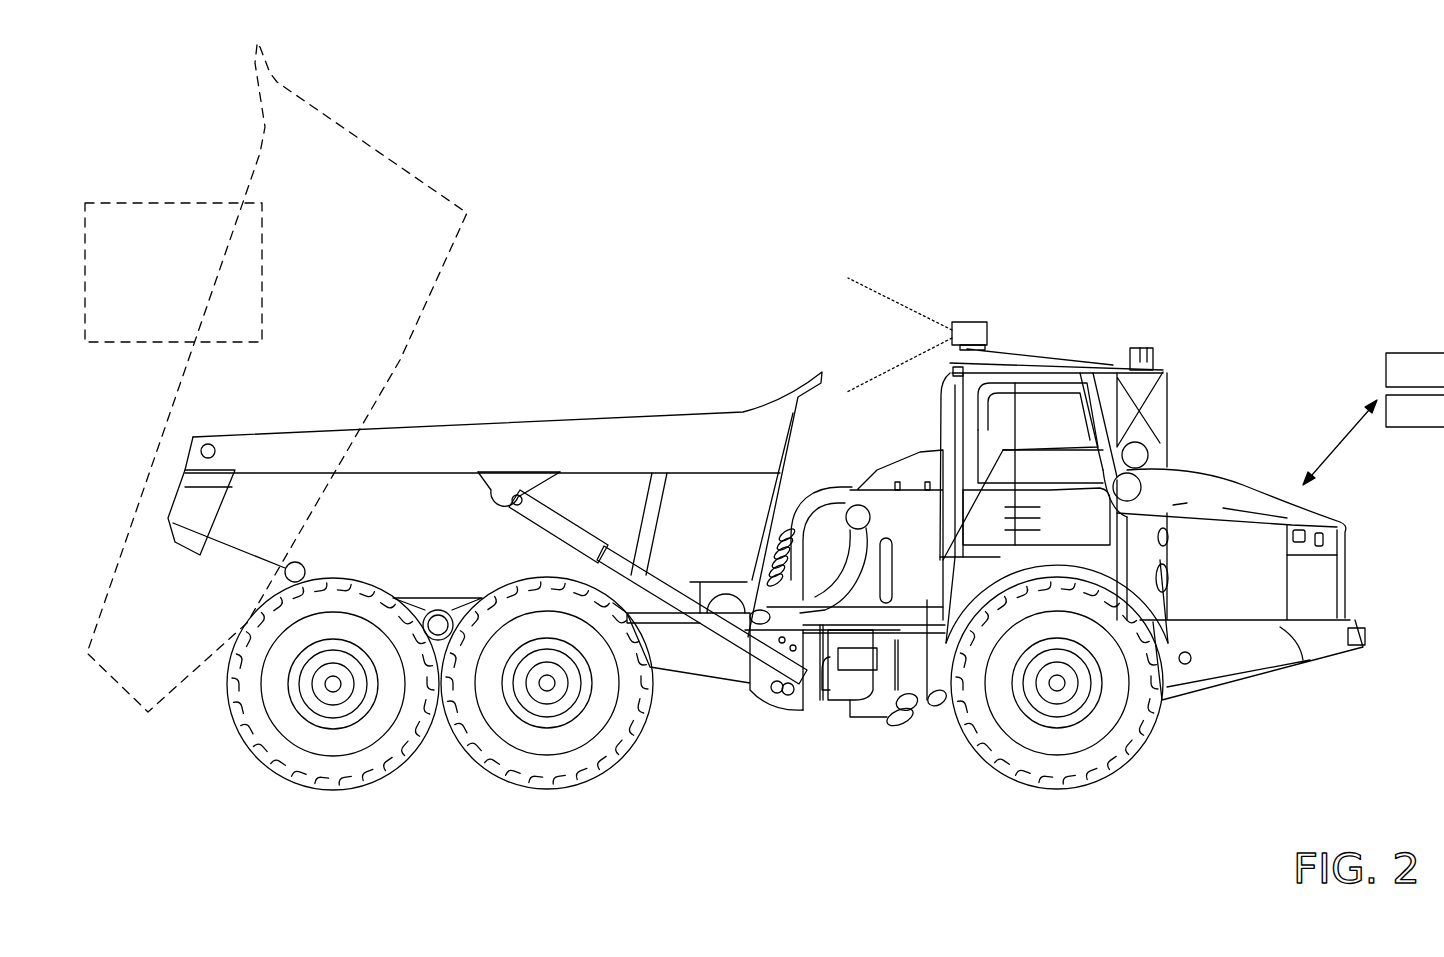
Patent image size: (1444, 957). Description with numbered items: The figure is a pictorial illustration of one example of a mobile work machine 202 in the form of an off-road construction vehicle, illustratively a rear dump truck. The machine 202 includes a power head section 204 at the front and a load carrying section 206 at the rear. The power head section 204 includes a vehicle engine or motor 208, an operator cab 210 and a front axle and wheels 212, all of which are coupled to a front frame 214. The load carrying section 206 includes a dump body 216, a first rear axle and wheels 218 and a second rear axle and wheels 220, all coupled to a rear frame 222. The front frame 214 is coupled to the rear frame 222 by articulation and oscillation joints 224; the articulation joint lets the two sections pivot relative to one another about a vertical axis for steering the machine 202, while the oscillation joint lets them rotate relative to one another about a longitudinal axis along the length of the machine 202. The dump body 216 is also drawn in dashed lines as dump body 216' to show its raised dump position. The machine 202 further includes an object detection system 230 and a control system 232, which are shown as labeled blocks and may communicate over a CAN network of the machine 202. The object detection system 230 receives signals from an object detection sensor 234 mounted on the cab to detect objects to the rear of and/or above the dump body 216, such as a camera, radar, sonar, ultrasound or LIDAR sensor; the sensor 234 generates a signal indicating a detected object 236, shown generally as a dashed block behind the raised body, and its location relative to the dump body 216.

The mobile work machine 202 is at (1010, 165).
The power head section 204 is at (1150, 262).
The load carrying section 206 is at (633, 260).
The vehicle engine or motor 208 is at (1291, 422).
The operator cab 210 is at (1010, 348).
The front axle and wheels 212 is at (1174, 745).
The front frame 214 is at (1268, 697).
The dump body 216 is at (495, 496).
The dump body in dump position 216' is at (277, 378).
The first rear axle and wheels 218 is at (663, 736).
The second rear axle and wheels 220 is at (206, 738).
The rear frame 222 is at (738, 713).
The articulation and oscillation joints 224 is at (870, 740).
The object detection system 230 is at (1415, 370).
The control system 232 is at (1373, 440).
The object detection sensor 234 is at (968, 320).
The detected object 236 is at (157, 203).